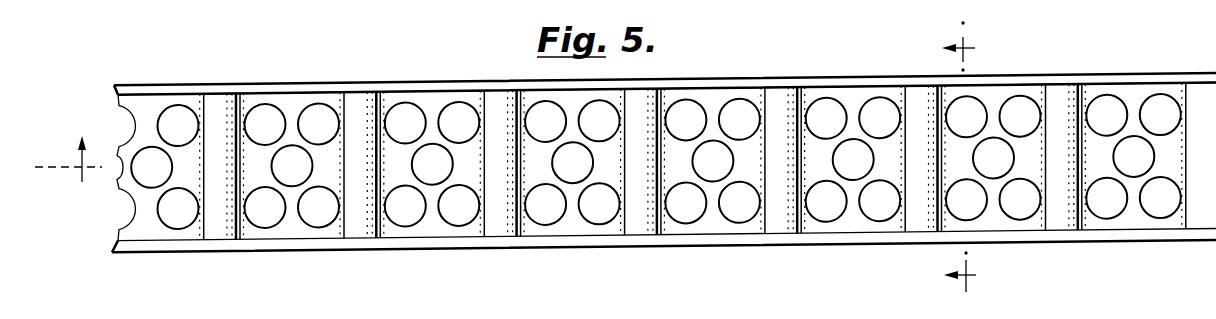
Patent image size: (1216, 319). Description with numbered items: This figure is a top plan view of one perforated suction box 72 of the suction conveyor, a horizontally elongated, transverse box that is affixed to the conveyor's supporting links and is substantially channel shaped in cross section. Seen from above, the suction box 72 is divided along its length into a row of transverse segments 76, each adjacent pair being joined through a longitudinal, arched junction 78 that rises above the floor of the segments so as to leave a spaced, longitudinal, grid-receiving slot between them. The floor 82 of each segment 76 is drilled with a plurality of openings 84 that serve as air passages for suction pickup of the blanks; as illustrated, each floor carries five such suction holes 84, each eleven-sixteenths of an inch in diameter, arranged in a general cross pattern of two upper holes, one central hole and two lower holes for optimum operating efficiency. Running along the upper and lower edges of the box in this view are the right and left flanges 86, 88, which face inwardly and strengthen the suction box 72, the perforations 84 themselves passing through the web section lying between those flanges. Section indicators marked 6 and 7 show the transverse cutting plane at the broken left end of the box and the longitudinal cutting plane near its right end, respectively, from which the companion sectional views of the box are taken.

The suction box 72 is at (757, 249).
The transverse segment 76 is at (433, 225).
The arched junction 78 is at (215, 226).
The floor 82 is at (292, 227).
The opening 84 is at (609, 217).
The right flange 86 is at (439, 70).
The left flange 88 is at (371, 238).
The section line 6 is at (68, 147).
The section line 7 is at (941, 157).